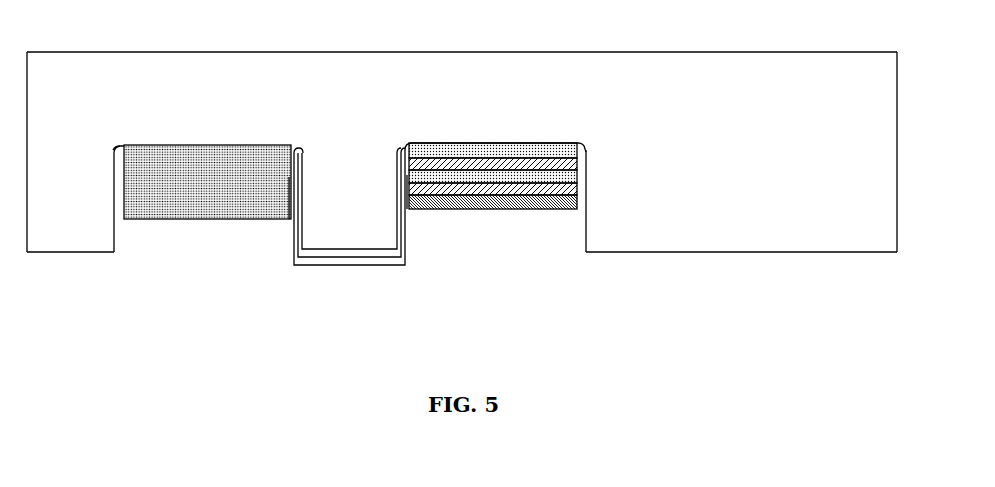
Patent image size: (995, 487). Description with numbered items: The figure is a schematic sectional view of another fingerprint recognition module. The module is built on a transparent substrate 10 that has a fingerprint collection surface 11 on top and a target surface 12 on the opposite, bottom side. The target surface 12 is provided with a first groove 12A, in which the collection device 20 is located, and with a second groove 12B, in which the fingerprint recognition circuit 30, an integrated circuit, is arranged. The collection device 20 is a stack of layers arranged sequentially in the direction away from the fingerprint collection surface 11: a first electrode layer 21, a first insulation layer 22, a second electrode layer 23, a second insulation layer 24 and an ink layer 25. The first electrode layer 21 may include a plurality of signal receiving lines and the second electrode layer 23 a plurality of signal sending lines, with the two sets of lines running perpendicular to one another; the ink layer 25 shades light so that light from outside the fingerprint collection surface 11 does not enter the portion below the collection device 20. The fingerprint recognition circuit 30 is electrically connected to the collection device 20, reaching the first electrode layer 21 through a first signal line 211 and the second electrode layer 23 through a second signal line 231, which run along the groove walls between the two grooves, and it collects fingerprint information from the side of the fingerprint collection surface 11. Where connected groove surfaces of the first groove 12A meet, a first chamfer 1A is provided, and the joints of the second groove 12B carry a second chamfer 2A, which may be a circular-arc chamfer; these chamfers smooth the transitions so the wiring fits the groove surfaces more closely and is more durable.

The substrate 10 is at (678, 61).
The fingerprint collection surface 11 is at (717, 42).
The target surface 12 is at (713, 262).
The first groove 12A is at (593, 227).
The second groove 12B is at (108, 223).
The first chamfer 1A is at (394, 141).
The second chamfer 2A is at (106, 141).
The collection device 20 is at (492, 246).
The first electrode layer 21 is at (438, 159).
The first insulation layer 22 is at (462, 173).
The second electrode layer 23 is at (487, 185).
The second insulation layer 24 is at (513, 197).
The ink layer 25 is at (493, 228).
The first signal line 211 is at (318, 276).
The second signal line 231 is at (368, 276).
The fingerprint recognition circuit 30 is at (212, 229).